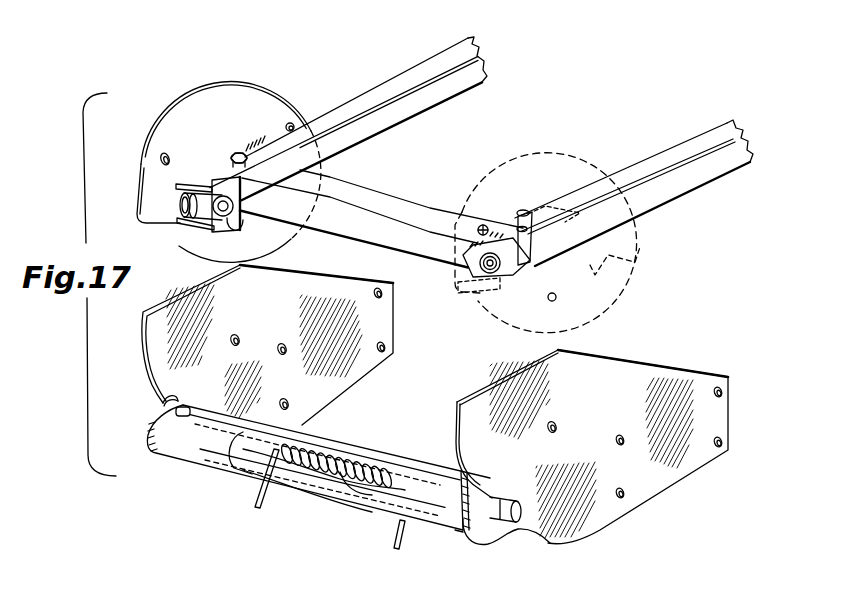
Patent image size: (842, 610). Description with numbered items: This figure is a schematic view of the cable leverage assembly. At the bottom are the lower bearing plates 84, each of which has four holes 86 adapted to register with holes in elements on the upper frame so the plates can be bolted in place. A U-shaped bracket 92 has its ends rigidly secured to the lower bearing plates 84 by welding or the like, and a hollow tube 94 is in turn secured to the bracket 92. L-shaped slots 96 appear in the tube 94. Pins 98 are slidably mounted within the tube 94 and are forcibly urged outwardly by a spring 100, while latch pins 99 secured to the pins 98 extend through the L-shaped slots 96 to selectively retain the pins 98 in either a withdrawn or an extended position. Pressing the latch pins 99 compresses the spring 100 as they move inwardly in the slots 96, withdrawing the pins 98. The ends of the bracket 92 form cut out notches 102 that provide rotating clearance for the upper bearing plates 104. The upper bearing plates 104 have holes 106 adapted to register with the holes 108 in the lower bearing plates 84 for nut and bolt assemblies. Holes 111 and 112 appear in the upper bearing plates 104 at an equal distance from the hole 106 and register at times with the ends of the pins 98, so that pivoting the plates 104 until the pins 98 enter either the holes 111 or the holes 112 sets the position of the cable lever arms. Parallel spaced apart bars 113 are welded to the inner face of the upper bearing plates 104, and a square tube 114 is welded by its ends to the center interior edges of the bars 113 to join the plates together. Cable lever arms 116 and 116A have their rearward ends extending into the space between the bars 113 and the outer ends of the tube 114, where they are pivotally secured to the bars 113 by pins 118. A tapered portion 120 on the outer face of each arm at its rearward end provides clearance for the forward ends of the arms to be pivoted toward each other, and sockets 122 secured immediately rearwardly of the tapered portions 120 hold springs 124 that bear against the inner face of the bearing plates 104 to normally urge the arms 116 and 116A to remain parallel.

The lower bearing plates 84 is at (150, 313).
The holes 86 is at (386, 347).
The U-shaped bracket 92 is at (455, 543).
The hollow tube 94 is at (317, 432).
The L-shaped slots 96 is at (244, 476).
The pins 98 is at (516, 536).
The latch pins 99 is at (270, 507).
The spring 100 is at (352, 440).
The cut out notches 102 is at (158, 389).
The upper bearing plates 104 is at (233, 100).
The holes 106 is at (242, 231).
The holes 108 is at (239, 337).
The holes 111 is at (161, 159).
The holes 112 is at (291, 123).
The parallel spaced apart bars 113 is at (178, 189).
The square tube 114 is at (388, 191).
The cable lever arm 116 is at (417, 70).
The cable lever arm 116A is at (692, 146).
The pins 118 is at (238, 152).
The tapered portion 120 is at (211, 182).
The sockets 122 is at (240, 193).
The springs 124 is at (185, 203).